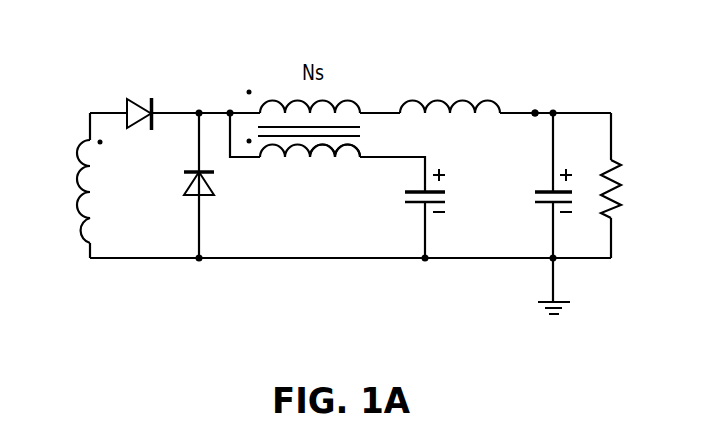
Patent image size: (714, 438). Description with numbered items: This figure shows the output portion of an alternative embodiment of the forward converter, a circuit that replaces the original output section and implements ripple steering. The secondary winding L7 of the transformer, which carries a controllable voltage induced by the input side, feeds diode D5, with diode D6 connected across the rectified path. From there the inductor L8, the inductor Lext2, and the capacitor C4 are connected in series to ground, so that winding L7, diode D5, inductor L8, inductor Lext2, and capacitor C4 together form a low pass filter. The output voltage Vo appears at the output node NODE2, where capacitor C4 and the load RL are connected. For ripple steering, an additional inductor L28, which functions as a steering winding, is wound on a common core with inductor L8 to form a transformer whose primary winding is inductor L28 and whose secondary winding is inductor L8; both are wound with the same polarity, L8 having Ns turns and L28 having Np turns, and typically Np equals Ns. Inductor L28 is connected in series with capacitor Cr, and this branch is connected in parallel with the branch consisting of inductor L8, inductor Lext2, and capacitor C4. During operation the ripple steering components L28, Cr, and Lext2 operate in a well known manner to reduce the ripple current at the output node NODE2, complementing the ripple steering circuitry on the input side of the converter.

The secondary winding L7 is at (87, 142).
The number of turns of inductor L8 Ns is at (115, 194).
The diode D5 is at (138, 97).
The diode D6 is at (209, 185).
The inductor L8 is at (272, 97).
The number of turns of inductor L28 Np is at (312, 174).
The inductor (steering winding) L28 is at (338, 148).
The capacitor Cr is at (420, 206).
The inductor Lext2 is at (438, 98).
The Node 2 NODE2 is at (535, 112).
The output voltage Vo is at (606, 87).
The capacitor C4 is at (546, 206).
The load RL is at (631, 189).